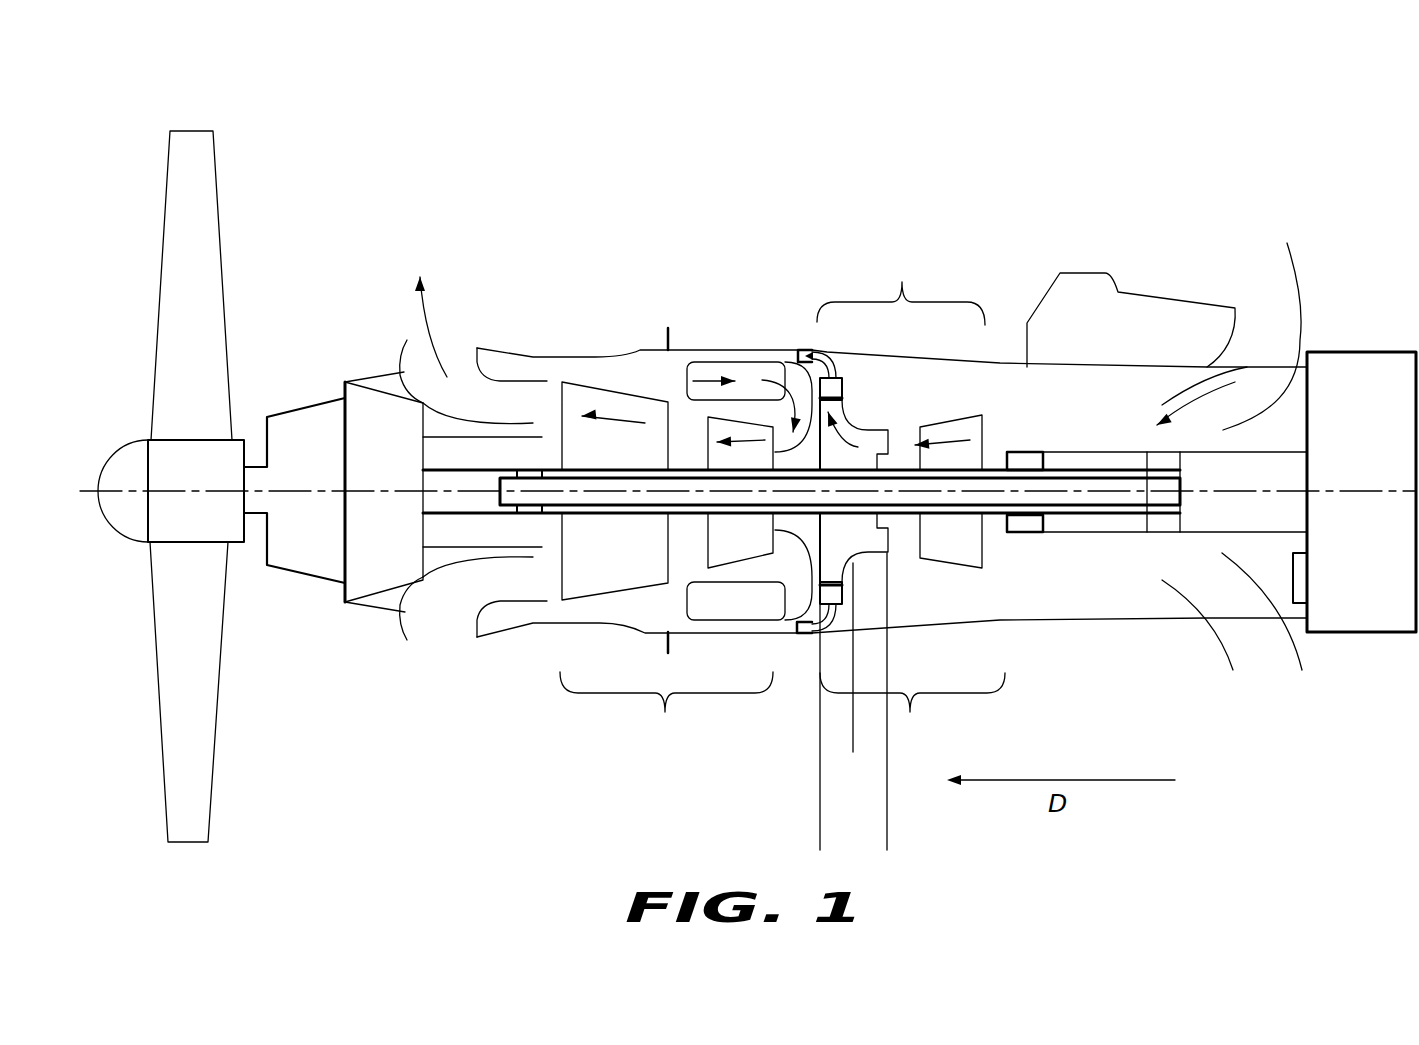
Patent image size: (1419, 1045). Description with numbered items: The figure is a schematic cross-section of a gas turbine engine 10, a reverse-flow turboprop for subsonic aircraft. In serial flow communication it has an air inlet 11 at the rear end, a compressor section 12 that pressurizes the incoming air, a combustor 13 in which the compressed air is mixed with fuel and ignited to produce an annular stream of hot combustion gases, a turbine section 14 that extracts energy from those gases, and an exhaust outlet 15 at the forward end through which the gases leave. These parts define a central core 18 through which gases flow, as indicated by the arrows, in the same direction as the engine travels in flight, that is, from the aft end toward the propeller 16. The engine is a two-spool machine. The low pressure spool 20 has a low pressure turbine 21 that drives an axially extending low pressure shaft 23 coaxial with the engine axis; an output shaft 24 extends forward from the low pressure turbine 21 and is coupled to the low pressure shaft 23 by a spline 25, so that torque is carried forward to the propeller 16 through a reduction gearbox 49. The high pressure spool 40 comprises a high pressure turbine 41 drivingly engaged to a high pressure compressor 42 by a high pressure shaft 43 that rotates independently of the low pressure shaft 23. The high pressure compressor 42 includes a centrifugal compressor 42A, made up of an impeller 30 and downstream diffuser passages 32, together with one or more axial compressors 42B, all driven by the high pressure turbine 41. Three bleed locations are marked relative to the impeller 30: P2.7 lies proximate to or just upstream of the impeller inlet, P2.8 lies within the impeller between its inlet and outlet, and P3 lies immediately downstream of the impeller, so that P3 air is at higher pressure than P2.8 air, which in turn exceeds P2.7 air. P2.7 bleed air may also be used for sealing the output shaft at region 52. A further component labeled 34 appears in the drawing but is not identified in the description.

The gas turbine engine 10 is at (392, 162).
The air inlet 11 is at (1310, 298).
The compressor section 12 is at (912, 711).
The combustor 13 is at (755, 362).
The turbine section 14 is at (666, 710).
The exhaust outlet 15 is at (430, 627).
The propeller 16 is at (123, 445).
The central core 18 is at (635, 413).
The low pressure spool 20 is at (692, 512).
The low pressure turbine 21 is at (585, 397).
The low pressure shaft 23 is at (693, 477).
The output shaft 24 is at (483, 467).
The spline 25 is at (520, 513).
The impeller 30 is at (853, 427).
The diffuser passages 32 is at (808, 358).
The exhaust case 34 is at (1162, 463).
The high pressure spool 40 is at (997, 457).
The high pressure turbine 41 is at (740, 412).
The high pressure compressor 42 is at (901, 288).
The centrifugal compressor 42A is at (878, 540).
The axial compressor 42B is at (958, 555).
The high pressure shaft 43 is at (868, 552).
The reduction gearbox 49 is at (383, 417).
The region 52 is at (1198, 323).
The P3 location P3 is at (823, 744).
The P2.8 location P2.8 is at (860, 675).
The P2.7 location P2.7 is at (892, 718).